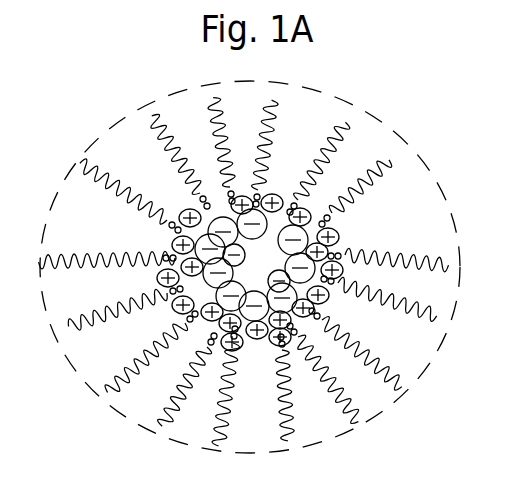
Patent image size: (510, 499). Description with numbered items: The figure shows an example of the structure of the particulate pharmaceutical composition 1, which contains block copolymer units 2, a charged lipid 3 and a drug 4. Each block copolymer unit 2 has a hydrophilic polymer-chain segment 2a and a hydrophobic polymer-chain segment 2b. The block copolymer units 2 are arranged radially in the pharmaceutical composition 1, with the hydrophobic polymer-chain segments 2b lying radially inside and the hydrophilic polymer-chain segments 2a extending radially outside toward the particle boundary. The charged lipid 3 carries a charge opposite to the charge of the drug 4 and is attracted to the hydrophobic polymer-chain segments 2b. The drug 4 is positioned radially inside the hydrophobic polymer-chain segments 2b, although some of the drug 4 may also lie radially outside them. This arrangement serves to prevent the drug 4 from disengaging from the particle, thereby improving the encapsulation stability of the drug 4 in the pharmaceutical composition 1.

The pharmaceutical composition 1 is at (405, 147).
The block copolymer unit 2 is at (104, 271).
The hydrophilic polymer-chain segment 2a is at (87, 251).
The hydrophobic polymer-chain segment 2b is at (165, 249).
The charged lipid 3 is at (285, 341).
The drug 4 is at (232, 280).